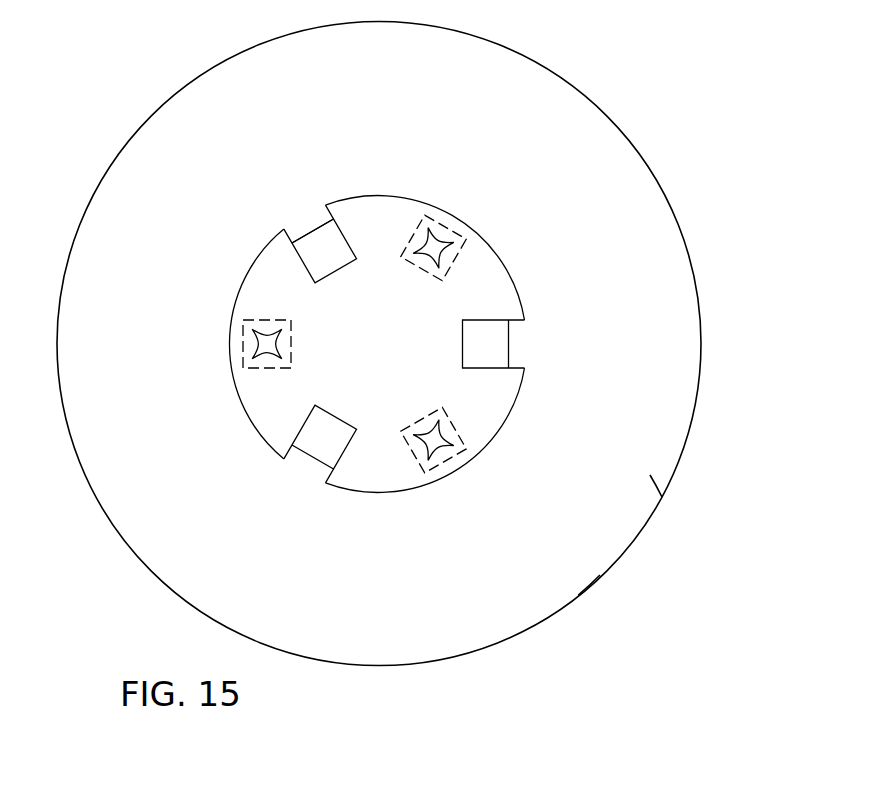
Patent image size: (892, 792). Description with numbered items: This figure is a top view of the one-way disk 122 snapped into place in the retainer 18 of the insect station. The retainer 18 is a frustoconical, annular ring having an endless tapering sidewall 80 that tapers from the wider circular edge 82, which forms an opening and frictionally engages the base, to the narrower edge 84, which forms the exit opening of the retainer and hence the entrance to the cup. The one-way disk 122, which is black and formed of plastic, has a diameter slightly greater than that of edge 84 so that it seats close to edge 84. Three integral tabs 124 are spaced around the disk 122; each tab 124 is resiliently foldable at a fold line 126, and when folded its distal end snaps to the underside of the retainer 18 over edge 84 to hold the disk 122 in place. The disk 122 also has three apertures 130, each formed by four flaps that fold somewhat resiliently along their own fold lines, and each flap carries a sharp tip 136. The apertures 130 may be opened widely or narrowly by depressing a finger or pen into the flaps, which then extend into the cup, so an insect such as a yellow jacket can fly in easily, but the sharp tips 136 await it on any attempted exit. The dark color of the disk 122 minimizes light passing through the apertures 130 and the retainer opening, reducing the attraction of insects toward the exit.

The retainer 18 is at (665, 194).
The tapering sidewall 80 is at (307, 222).
The edge 82 is at (578, 595).
The edge 84 is at (317, 457).
The one-way disk 122 is at (502, 255).
The tab 124 is at (326, 253).
The fold line 126 is at (462, 347).
The aperture 130 is at (272, 352).
The sharp tip 136 is at (435, 462).